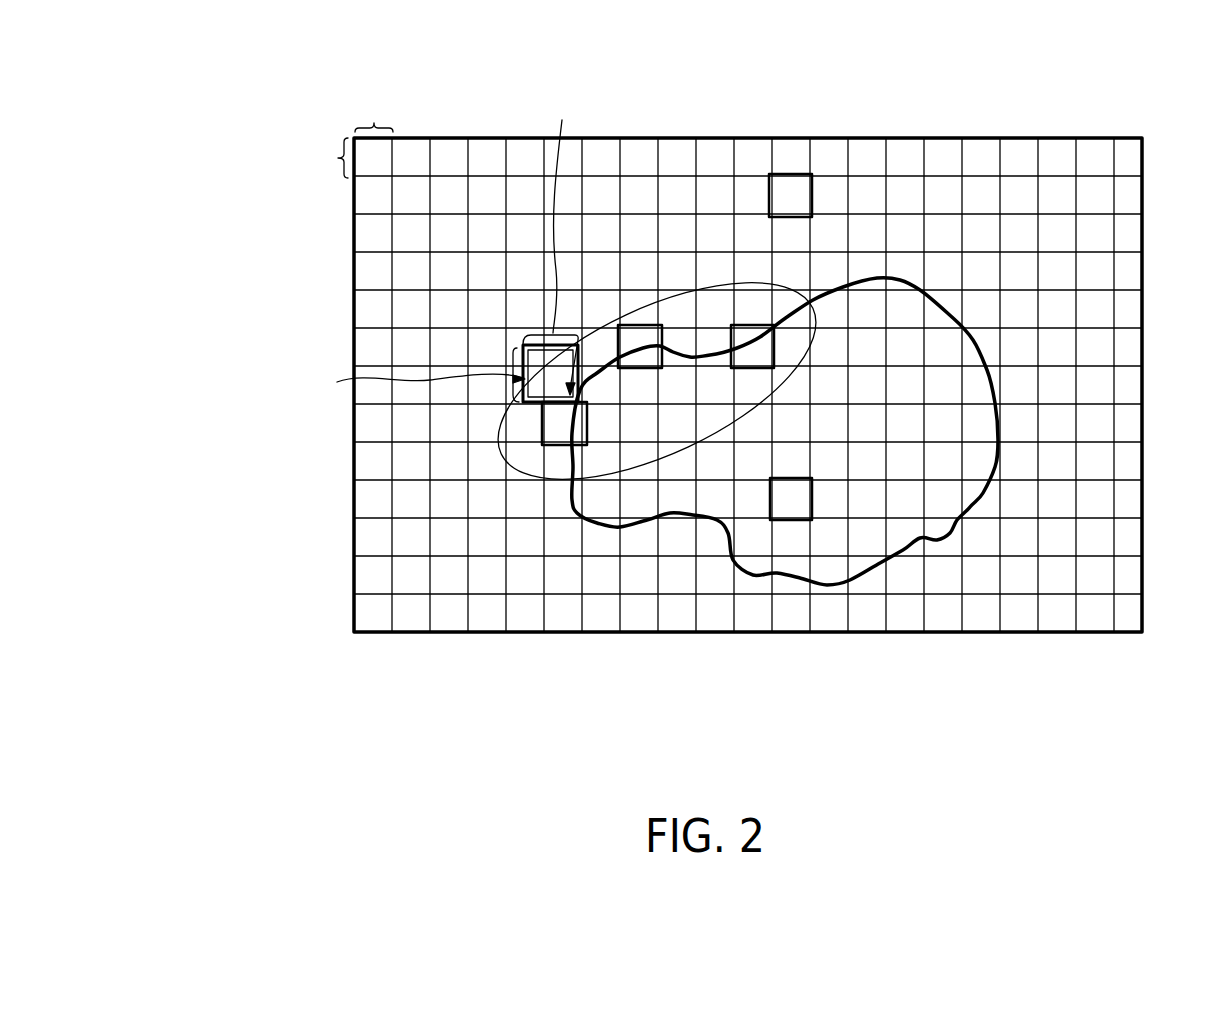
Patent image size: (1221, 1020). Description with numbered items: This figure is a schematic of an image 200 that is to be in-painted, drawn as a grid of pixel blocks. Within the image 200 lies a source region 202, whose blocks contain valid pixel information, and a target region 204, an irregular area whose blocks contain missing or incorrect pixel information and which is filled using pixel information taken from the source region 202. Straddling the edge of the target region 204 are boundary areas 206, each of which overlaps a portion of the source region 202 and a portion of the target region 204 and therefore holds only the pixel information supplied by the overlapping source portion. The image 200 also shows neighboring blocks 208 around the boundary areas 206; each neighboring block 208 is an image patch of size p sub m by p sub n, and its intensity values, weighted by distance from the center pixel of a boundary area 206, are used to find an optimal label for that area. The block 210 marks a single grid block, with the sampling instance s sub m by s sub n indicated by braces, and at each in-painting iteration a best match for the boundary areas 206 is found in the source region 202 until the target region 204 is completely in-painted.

The image 200 is at (365, 718).
The source region 202 is at (817, 192).
The target region 204 is at (834, 510).
The boundary areas 206 is at (681, 288).
The neighboring blocks 208 is at (600, 327).
The block 210 is at (345, 188).